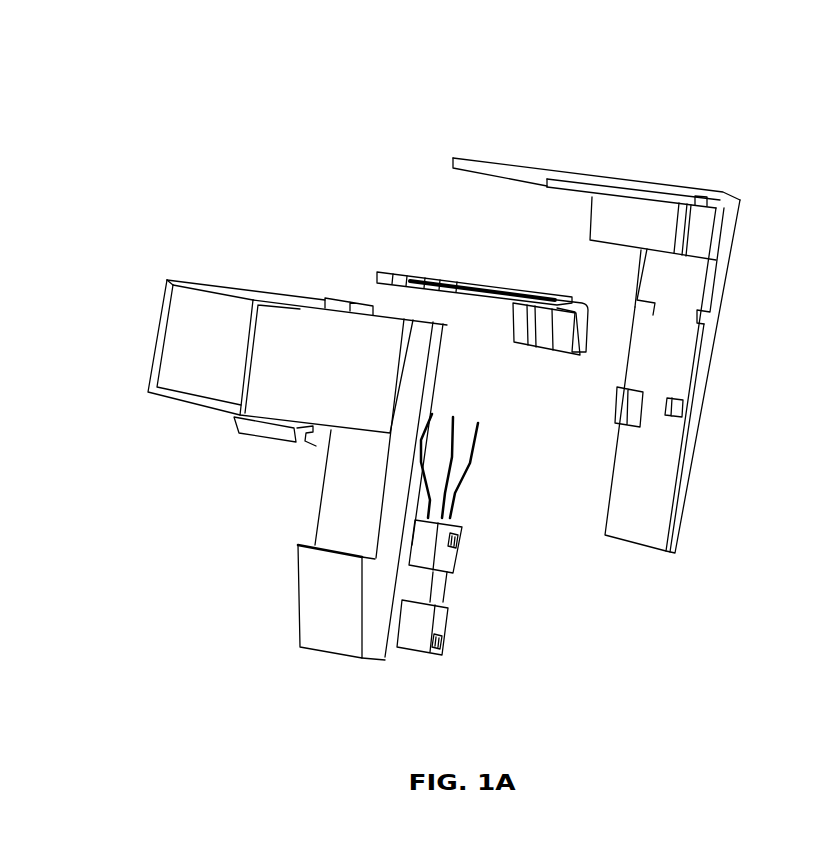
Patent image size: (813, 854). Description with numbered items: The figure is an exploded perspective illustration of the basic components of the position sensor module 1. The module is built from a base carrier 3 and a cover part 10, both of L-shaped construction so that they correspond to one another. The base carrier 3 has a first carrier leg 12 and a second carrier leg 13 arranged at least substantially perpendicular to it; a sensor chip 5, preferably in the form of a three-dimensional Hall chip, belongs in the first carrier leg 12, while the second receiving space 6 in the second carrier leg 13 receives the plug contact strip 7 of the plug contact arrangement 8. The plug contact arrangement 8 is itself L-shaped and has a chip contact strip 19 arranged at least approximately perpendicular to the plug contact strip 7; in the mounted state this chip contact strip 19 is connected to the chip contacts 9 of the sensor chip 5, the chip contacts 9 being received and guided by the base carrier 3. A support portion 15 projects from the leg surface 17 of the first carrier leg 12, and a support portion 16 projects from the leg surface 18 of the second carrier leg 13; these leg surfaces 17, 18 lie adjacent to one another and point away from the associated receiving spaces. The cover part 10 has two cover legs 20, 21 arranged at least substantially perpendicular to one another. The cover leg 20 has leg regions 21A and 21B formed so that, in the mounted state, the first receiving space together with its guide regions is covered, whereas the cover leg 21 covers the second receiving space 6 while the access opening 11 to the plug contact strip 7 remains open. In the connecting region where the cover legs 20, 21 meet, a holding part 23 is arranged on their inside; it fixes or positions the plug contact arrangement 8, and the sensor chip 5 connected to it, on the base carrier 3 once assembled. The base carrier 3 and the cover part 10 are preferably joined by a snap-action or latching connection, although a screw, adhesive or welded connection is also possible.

The position sensor module 1 is at (631, 136).
The base carrier 3 is at (294, 248).
The sensor chip 5 is at (454, 621).
The second receiving space 6 is at (227, 337).
The plug contact strip 7 is at (468, 266).
The plug contact arrangement 8 is at (492, 331).
The chip contacts 9 is at (479, 454).
The cover part 10 is at (722, 191).
The access opening 11 is at (233, 357).
The first carrier leg 12 is at (373, 628).
The second carrier leg 13 is at (313, 323).
The support portion 15 is at (328, 560).
The support portion 16 is at (257, 440).
The leg surface 17 is at (349, 496).
The leg surface 18 is at (323, 430).
The chip contact strip 19 is at (585, 338).
The cover leg 20 is at (562, 169).
The cover leg 21 is at (704, 400).
The leg region 21A is at (700, 298).
The leg region 21B is at (683, 477).
The holding part 23 is at (630, 243).